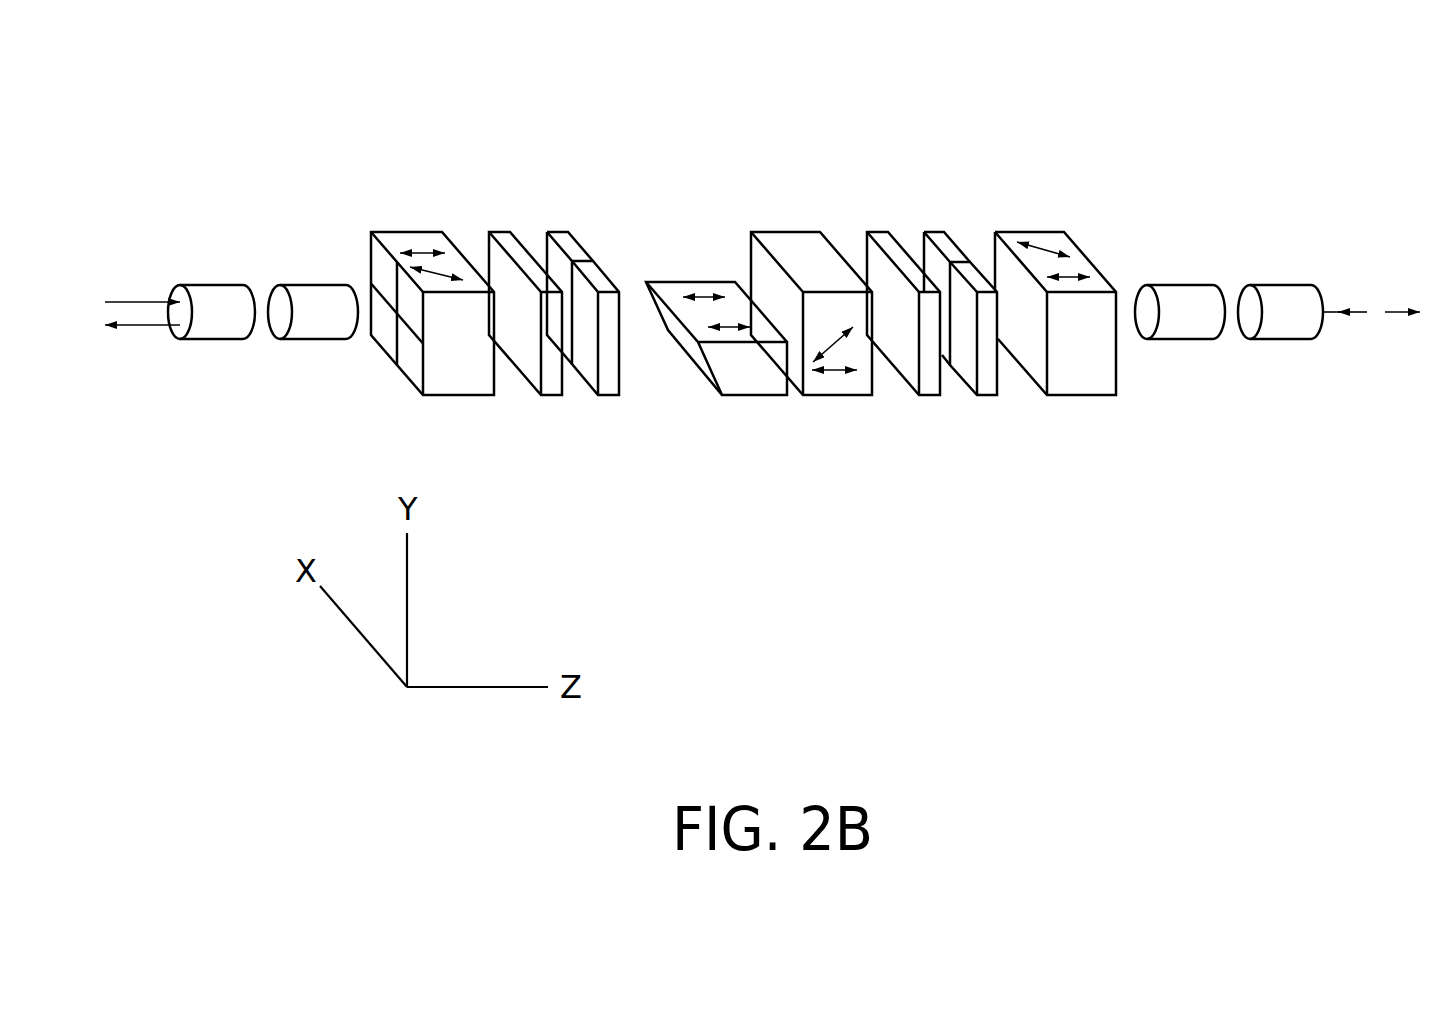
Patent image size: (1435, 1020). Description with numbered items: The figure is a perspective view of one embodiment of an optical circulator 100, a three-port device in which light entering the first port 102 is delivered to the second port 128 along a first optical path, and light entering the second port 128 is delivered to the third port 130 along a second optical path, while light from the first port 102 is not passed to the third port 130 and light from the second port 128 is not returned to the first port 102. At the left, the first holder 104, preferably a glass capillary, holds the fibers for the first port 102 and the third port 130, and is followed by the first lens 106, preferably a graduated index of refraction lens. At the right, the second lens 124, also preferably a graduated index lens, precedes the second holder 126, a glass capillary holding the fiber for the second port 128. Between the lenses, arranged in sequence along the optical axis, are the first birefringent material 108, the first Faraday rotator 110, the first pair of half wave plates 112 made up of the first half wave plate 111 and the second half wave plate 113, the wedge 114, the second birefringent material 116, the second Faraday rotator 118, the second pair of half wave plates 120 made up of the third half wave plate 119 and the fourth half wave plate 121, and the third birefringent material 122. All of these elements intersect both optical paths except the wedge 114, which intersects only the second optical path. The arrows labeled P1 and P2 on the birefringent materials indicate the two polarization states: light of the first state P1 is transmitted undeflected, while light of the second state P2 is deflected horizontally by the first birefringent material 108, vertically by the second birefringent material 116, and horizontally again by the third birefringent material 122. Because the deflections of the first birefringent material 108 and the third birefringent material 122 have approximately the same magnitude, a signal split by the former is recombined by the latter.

The optical circulator 100 is at (770, 89).
The first port 102 is at (118, 300).
The first holder 104 is at (206, 285).
The first lens 106 is at (300, 285).
The first birefringent material 108 is at (370, 231).
The first Faraday rotator 110 is at (494, 232).
The first half wave plate 111 is at (553, 228).
The first pair of half wave plates 112 is at (628, 284).
The second half wave plate 113 is at (603, 397).
The wedge 114 is at (693, 280).
The second birefringent material 116 is at (784, 230).
The second Faraday rotator 118 is at (875, 230).
The third half wave plate 119 is at (932, 230).
The second pair of half wave plates 120 is at (1010, 283).
The fourth half wave plate 121 is at (988, 397).
The third birefringent material 122 is at (1077, 237).
The second lens 124 is at (1193, 283).
The second holder 126 is at (1283, 283).
The second port 128 is at (1337, 307).
The third port 130 is at (145, 327).
The first polarization state P1 is at (420, 250).
The second polarization state P2 is at (448, 272).